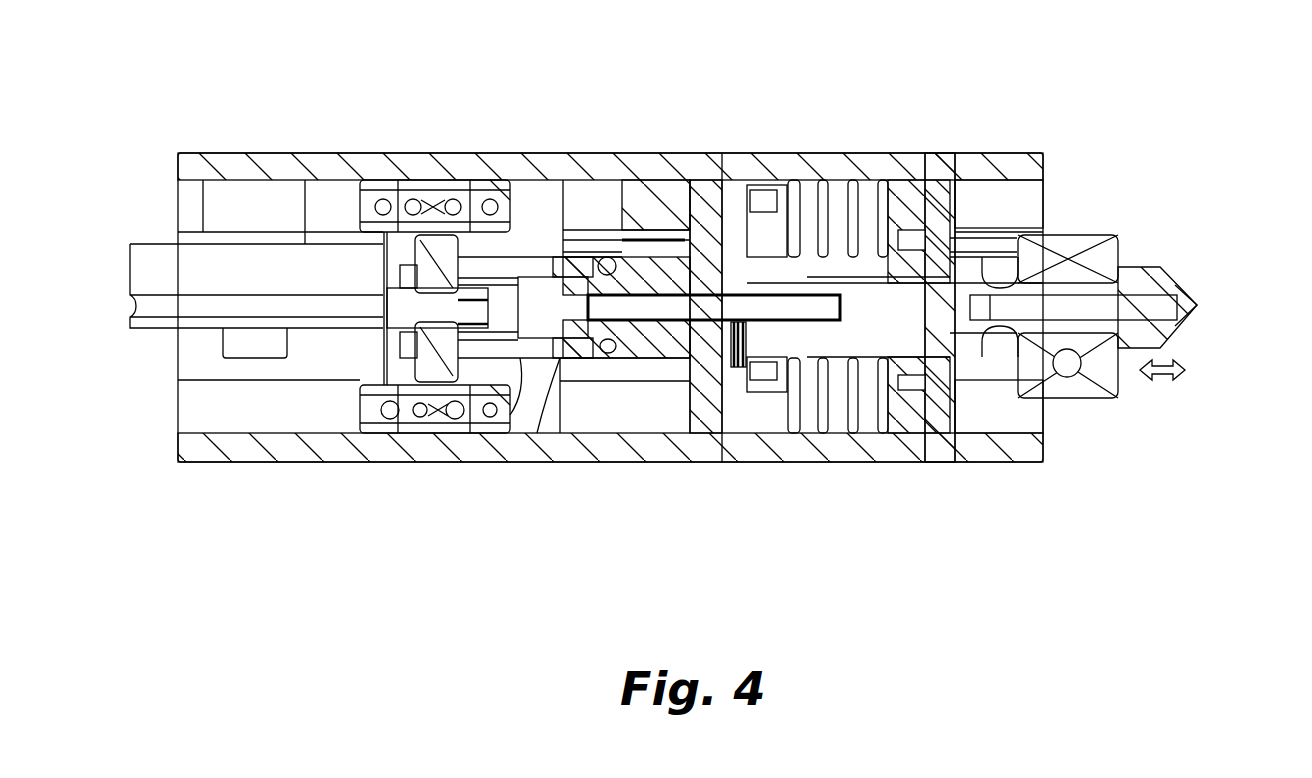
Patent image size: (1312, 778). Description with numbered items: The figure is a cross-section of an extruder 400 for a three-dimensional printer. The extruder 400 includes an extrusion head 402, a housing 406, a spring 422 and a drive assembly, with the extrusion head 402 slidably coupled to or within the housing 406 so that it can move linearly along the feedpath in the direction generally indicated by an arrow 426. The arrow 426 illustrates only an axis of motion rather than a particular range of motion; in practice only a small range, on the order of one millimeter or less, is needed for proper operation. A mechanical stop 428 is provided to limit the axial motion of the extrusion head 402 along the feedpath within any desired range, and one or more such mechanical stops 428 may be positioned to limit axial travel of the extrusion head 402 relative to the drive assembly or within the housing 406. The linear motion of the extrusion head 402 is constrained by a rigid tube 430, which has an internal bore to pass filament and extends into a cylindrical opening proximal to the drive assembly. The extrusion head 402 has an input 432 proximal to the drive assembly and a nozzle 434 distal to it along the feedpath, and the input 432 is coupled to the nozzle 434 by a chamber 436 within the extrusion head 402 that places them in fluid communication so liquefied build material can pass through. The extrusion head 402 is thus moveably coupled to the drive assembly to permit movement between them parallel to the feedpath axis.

The extruder 400 is at (360, 76).
The extrusion head 402 is at (1180, 285).
The housing 406 is at (797, 152).
The spring 422 is at (733, 370).
The arrow 426 is at (1167, 390).
The mechanical stop 428 is at (773, 183).
The rigid tube 430 is at (663, 308).
The input 432 is at (1075, 305).
The nozzle 434 is at (1197, 305).
The chamber 436 is at (1140, 305).